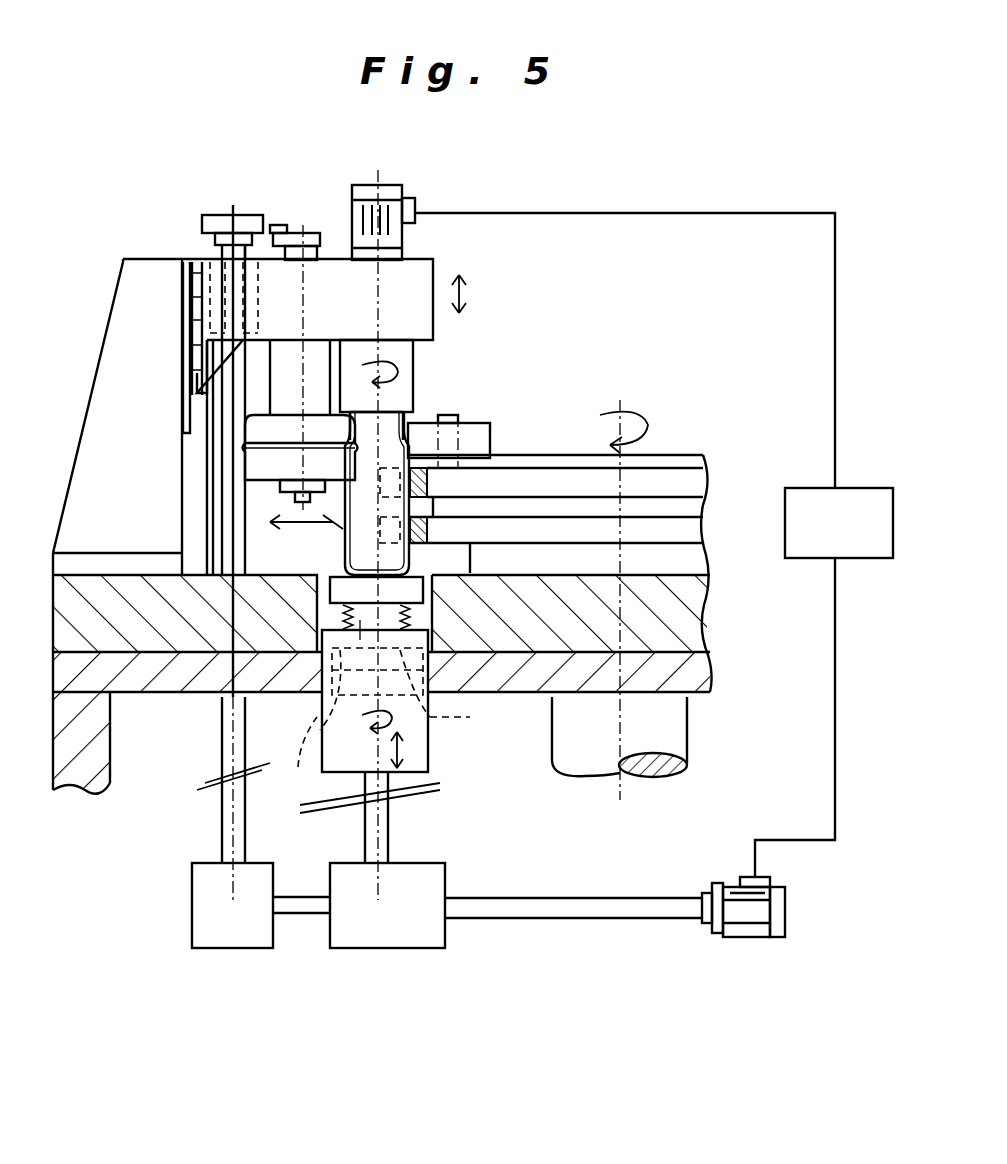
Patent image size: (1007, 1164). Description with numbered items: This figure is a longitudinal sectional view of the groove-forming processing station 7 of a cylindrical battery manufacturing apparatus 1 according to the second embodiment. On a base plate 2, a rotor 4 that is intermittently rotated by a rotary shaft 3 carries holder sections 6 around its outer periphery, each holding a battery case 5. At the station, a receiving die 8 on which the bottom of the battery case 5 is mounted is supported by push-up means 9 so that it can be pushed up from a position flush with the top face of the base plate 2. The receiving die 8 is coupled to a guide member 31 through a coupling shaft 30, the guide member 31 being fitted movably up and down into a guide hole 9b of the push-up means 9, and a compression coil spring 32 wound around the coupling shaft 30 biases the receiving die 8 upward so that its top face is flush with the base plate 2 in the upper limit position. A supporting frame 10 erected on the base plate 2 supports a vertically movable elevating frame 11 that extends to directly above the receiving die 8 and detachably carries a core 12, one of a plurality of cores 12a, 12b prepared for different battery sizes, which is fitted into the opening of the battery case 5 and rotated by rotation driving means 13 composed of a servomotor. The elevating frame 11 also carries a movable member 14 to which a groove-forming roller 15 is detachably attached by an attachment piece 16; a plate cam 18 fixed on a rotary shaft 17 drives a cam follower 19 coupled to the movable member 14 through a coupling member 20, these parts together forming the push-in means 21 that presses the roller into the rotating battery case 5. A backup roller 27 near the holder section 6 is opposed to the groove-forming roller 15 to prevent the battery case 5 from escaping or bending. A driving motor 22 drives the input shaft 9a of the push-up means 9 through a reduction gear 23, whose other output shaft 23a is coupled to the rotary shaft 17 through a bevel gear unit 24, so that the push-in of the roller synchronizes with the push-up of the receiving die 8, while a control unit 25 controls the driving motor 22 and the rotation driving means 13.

The manufacturing apparatus 1 is at (846, 375).
The base plate 2 is at (673, 625).
The rotary shaft 3 is at (663, 733).
The rotor 4 is at (668, 487).
The battery case 5 is at (345, 548).
The holder section 6 is at (440, 525).
The groove-forming processing station 7 is at (98, 335).
The receiving die 8 is at (317, 592).
The push-up means 9 is at (445, 740).
The input shaft 9a is at (390, 822).
The guide hole 9b is at (298, 756).
The supporting frame 10 is at (140, 418).
The elevating frame 11 is at (425, 278).
The core 12 is at (505, 335).
The core 12a is at (397, 353).
The core 12b is at (390, 423).
The rotation driving means 13 is at (400, 228).
The movable member 14 is at (260, 372).
The groove-forming roller 15 is at (270, 467).
The attachment piece 16 is at (280, 487).
The rotary shaft 17 is at (225, 508).
The plate cam 18 is at (215, 222).
The cam follower 19 is at (278, 222).
The coupling member 20 is at (312, 232).
The push-in means 21 is at (187, 225).
The driving motor 22 is at (757, 913).
The reduction gear 23 is at (430, 880).
The output shaft 23a is at (303, 905).
The bevel gear unit 24 is at (205, 893).
The control unit 25 is at (875, 488).
The backup roller 27 is at (475, 430).
The coupling shaft 30 is at (360, 620).
The guide member 31 is at (412, 692).
The compression coil spring 32 is at (318, 605).